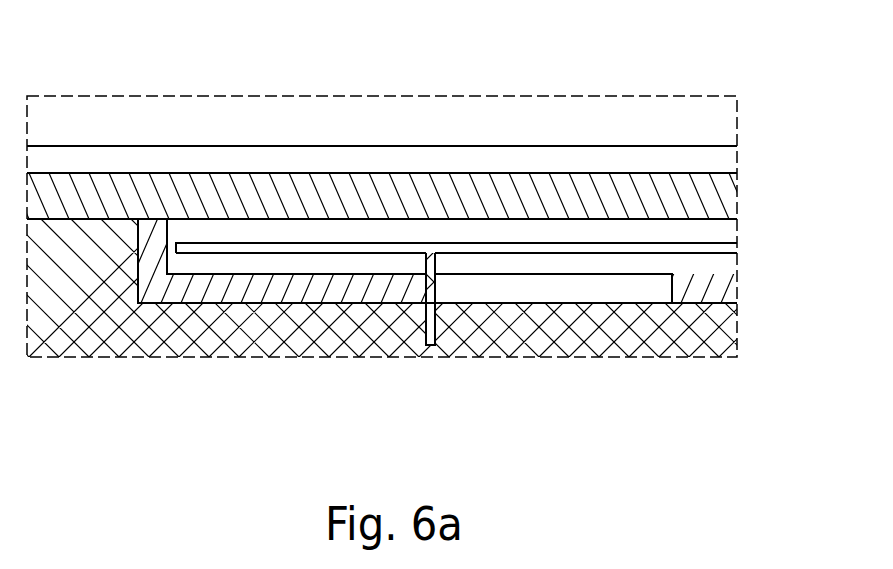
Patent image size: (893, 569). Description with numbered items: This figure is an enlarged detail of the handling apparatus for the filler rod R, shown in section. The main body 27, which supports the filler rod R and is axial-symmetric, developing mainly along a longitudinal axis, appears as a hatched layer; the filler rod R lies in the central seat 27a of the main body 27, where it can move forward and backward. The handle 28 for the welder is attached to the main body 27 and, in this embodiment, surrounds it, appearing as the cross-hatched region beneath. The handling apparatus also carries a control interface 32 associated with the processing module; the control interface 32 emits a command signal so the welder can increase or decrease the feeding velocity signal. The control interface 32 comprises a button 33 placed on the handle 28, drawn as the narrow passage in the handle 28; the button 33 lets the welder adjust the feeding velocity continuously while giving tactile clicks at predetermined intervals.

The filler rod R is at (238, 125).
The main body 27 is at (715, 195).
The central seat 27a is at (495, 172).
The handle 28 is at (537, 357).
The control interface 32 is at (421, 347).
The button 33 is at (437, 340).